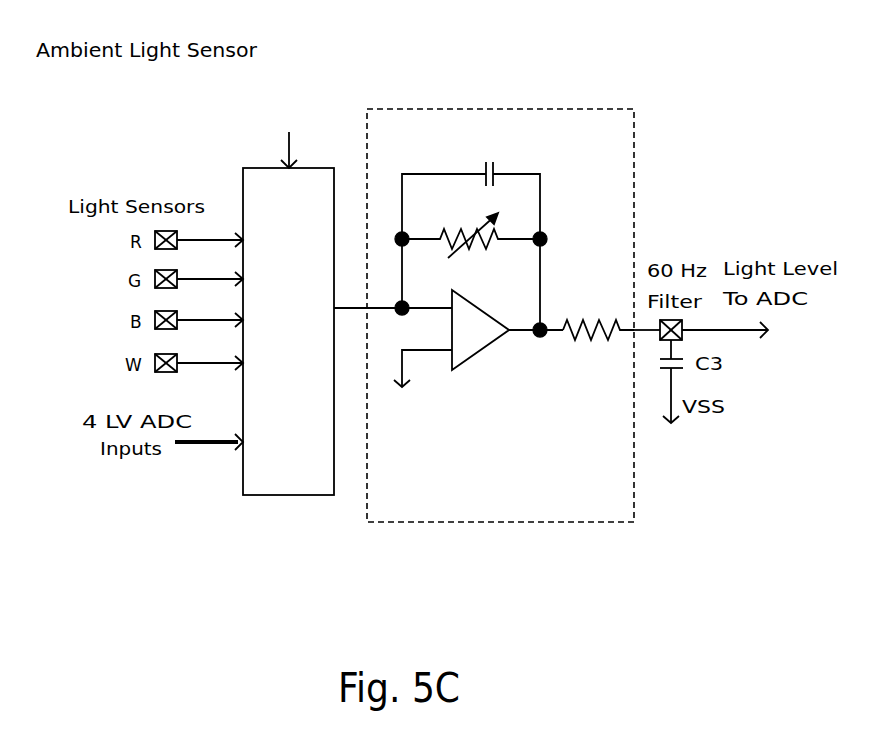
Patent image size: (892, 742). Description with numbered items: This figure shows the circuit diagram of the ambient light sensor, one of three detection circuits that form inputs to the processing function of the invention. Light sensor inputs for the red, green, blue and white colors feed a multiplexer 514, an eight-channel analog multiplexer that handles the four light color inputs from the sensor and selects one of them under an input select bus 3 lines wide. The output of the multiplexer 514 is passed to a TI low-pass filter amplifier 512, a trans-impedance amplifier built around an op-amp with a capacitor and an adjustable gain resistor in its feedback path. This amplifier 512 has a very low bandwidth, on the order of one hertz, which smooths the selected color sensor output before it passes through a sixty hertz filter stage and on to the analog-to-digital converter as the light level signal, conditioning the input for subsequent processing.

The multiplexer 514 is at (282, 495).
The TI low-pass filter amplifier 512 is at (578, 522).
The input select bus (3 lines) 3 is at (280, 137).